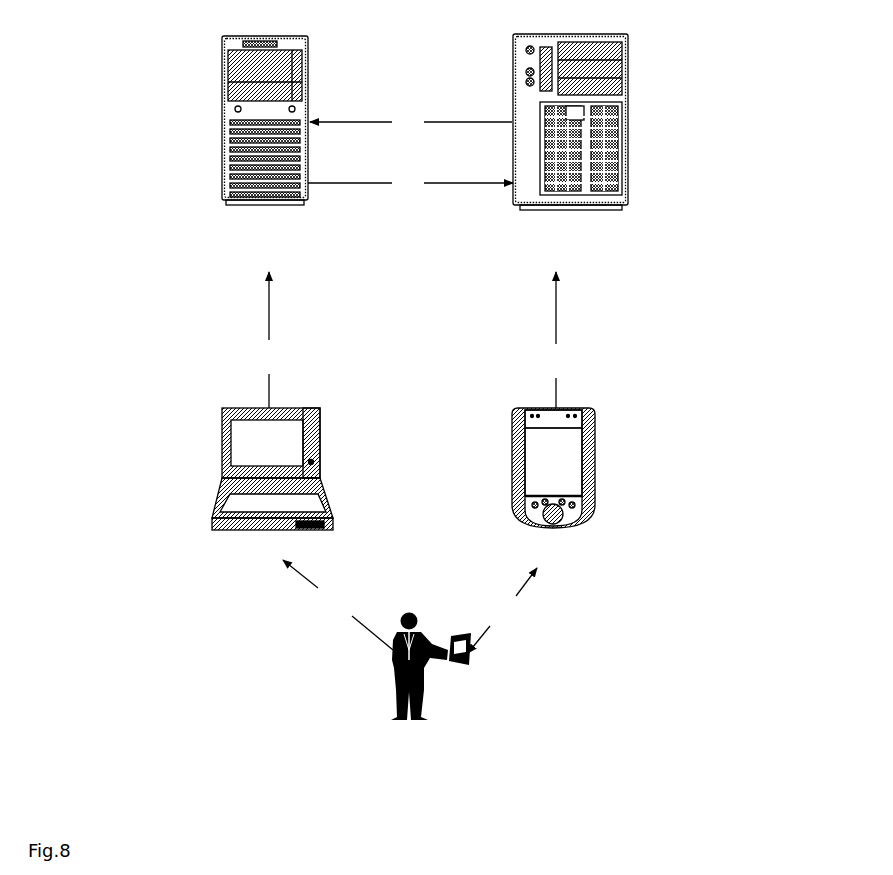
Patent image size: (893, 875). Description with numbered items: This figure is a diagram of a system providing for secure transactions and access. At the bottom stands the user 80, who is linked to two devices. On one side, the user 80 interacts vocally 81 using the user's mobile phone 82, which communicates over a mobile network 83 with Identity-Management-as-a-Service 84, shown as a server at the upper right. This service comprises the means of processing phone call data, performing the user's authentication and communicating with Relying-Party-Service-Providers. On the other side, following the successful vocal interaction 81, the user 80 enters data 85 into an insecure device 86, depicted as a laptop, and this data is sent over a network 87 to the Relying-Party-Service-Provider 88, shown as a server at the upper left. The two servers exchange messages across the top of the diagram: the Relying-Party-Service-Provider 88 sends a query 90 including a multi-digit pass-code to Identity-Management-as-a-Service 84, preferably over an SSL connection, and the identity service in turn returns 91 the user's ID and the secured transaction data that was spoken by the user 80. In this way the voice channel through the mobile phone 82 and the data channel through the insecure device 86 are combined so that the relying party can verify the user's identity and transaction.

The user 80 is at (380, 742).
The vocal interaction 81 is at (502, 610).
The mobile phone 82 is at (595, 468).
The mobile network 83 is at (556, 340).
The Identity-Management-as-a-Service 84 is at (628, 122).
The data 85 is at (338, 605).
The insecure device 86 is at (222, 468).
The network 87 is at (269, 340).
The Relying-Party-Service-Provider 88 is at (221, 122).
The query 90 is at (410, 184).
The return of user's ID and secured transaction data 91 is at (411, 123).